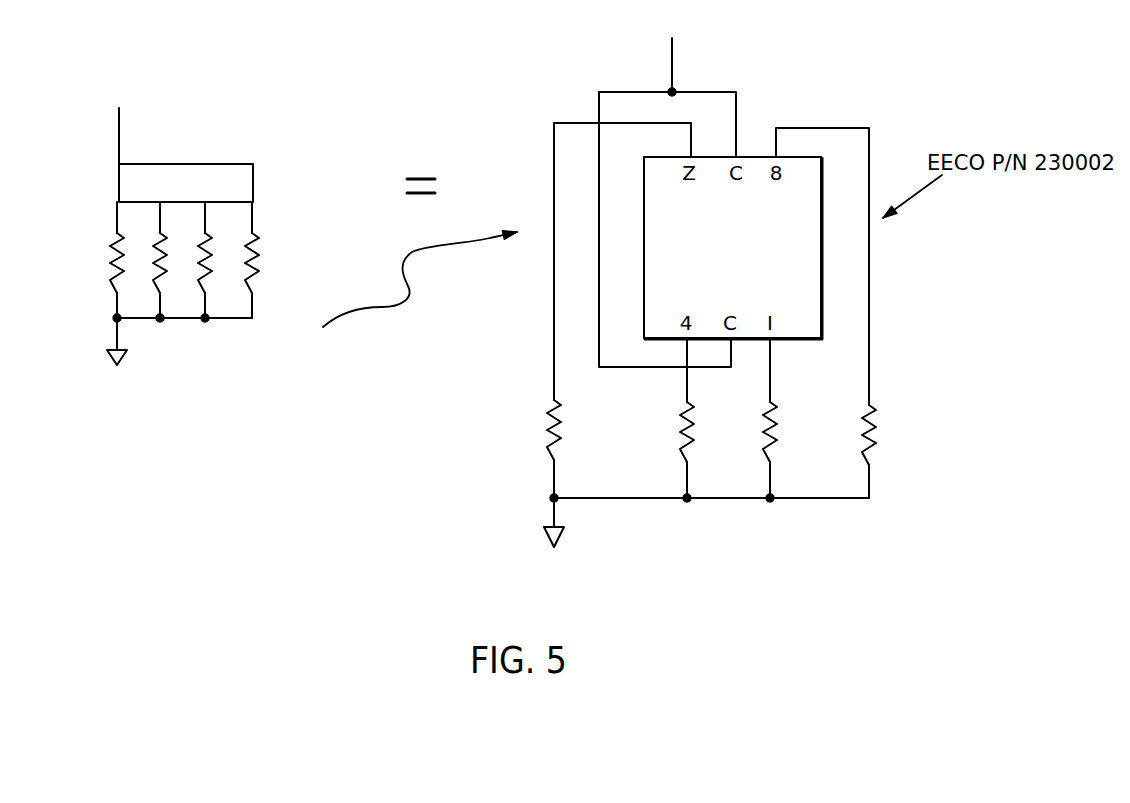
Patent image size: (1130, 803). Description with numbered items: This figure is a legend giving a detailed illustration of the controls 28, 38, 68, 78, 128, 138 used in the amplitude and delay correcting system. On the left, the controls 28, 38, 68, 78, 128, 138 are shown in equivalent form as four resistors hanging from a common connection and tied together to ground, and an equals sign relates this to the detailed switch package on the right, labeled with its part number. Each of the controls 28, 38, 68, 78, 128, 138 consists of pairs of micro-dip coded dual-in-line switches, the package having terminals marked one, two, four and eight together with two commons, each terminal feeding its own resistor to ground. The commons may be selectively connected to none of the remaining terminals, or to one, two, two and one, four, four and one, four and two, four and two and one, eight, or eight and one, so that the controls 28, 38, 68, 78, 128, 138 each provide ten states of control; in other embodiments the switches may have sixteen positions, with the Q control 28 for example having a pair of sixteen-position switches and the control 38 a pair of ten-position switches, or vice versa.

The Q control 28 is at (280, 248).
The control 38 is at (280, 248).
The control 68 is at (280, 248).
The control 78 is at (280, 248).
The control 128 is at (280, 248).
The control 138 is at (453, 380).